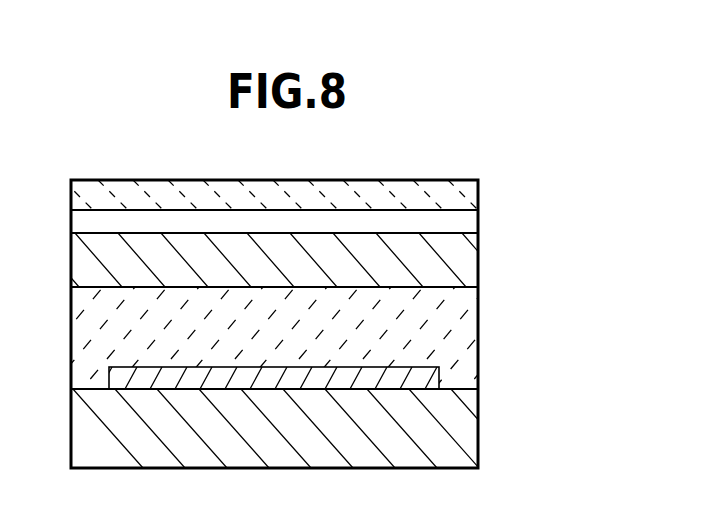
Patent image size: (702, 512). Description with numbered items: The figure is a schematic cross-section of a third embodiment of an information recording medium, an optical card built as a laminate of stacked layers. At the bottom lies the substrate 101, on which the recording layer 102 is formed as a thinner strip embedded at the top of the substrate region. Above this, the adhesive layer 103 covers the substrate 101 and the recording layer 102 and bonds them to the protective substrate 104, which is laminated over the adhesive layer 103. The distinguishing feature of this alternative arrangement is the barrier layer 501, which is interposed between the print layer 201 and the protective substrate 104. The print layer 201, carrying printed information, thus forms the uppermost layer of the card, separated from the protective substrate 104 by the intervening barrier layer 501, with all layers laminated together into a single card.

The print layer 201 is at (465, 198).
The barrier layer 501 is at (462, 230).
The protective substrate 104 is at (465, 272).
The adhesive layer 103 is at (470, 322).
The recording layer 102 is at (430, 383).
The substrate 101 is at (465, 435).